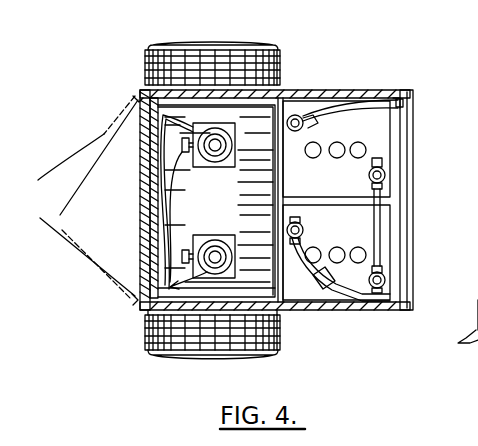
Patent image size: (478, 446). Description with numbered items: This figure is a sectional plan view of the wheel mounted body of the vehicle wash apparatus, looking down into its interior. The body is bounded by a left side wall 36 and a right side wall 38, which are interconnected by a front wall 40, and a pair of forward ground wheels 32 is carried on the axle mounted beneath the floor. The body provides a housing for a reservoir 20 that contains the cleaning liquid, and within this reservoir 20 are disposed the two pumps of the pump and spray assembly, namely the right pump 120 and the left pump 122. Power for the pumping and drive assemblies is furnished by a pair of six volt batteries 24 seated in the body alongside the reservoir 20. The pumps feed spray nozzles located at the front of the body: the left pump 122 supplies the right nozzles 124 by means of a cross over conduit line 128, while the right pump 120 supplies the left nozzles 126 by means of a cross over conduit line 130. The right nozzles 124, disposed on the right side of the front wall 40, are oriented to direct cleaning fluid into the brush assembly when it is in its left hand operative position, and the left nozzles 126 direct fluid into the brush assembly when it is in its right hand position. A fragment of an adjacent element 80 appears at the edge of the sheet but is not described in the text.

The reservoir 20 is at (148, 140).
The batteries 24 is at (385, 126).
The forward ground wheels 32 is at (280, 58).
The left side wall 36 is at (375, 315).
The right side wall 38 is at (358, 92).
The front wall 40 is at (147, 190).
The adjacent figure fragment 80 is at (477, 298).
The right pump 120 is at (217, 166).
The left pump 122 is at (292, 290).
The right nozzles 124 is at (137, 97).
The left nozzles 126 is at (137, 300).
The cross over conduit line 128 is at (147, 168).
The cross over conduit line 130 is at (147, 218).